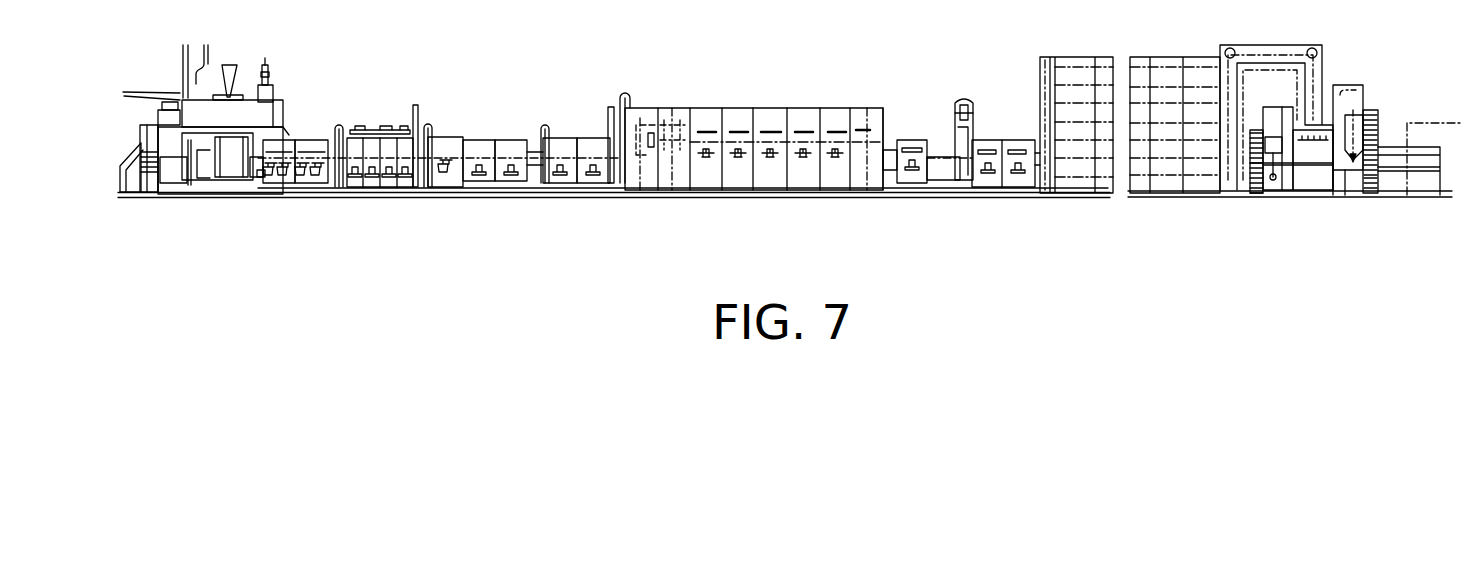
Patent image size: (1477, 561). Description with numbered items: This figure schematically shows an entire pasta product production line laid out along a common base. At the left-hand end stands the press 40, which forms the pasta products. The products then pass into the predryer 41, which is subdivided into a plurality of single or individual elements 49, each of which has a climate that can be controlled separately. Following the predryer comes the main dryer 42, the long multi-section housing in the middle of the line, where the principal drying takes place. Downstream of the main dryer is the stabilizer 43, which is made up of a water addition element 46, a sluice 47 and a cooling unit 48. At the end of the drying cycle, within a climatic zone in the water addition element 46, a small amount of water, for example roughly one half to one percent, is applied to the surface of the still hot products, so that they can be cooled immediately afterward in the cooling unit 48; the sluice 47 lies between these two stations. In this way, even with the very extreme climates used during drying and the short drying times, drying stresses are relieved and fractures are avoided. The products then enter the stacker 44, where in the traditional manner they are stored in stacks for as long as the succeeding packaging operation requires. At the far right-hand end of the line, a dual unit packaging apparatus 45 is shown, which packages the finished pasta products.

The press 40 is at (177, 172).
The predryer 41 is at (357, 205).
The main dryer 42 is at (648, 160).
The stabilizer 43 is at (928, 222).
The stacker 44 is at (1103, 163).
The dual unit packaging apparatus 45 is at (1307, 153).
The water addition element 46 is at (912, 137).
The sluice 47 is at (963, 99).
The cooling unit 48 is at (1002, 124).
The individual elements 49 is at (512, 143).